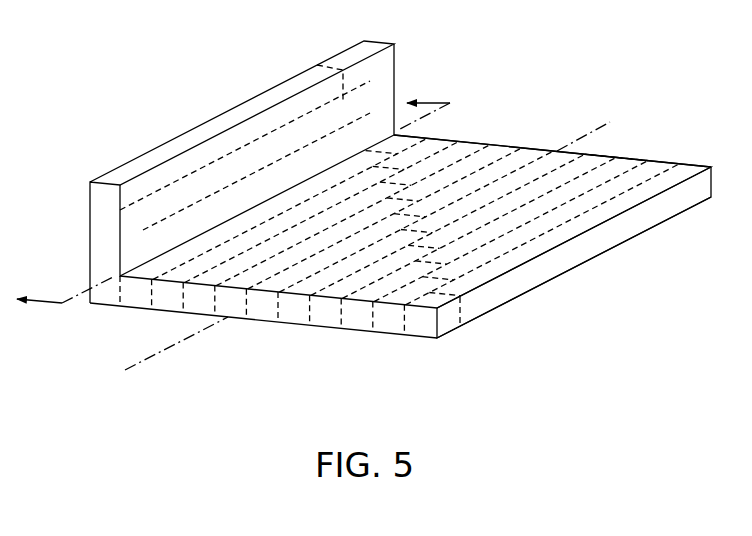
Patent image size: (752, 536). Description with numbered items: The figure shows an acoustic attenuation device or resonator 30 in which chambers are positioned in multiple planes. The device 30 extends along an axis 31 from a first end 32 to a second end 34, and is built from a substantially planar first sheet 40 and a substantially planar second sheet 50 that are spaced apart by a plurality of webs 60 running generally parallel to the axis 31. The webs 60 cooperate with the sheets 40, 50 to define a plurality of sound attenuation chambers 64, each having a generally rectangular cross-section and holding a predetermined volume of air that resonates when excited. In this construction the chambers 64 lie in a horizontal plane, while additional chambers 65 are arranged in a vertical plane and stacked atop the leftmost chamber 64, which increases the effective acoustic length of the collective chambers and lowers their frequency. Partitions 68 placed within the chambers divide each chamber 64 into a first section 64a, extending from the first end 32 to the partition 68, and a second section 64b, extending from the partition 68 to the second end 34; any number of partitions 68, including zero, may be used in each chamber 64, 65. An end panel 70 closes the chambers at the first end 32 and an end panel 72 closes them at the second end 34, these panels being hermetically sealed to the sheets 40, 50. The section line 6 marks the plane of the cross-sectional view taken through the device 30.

The acoustic attenuation device 30 is at (609, 145).
The axis 31 is at (591, 124).
The first end 32 is at (109, 351).
The second end 34 is at (478, 136).
The first sheet 40 is at (241, 108).
The second sheet 50 is at (573, 270).
The web 60 is at (396, 50).
The sound attenuation chamber 64 is at (392, 324).
The first chamber section 64a is at (355, 323).
The second chamber section 64b is at (623, 167).
The vertical-plane chamber 65 is at (175, 207).
The partition 68 is at (313, 63).
The end panel 70 is at (100, 230).
The end panel 72 is at (672, 163).
The section line 6- 6 is at (231, 189).